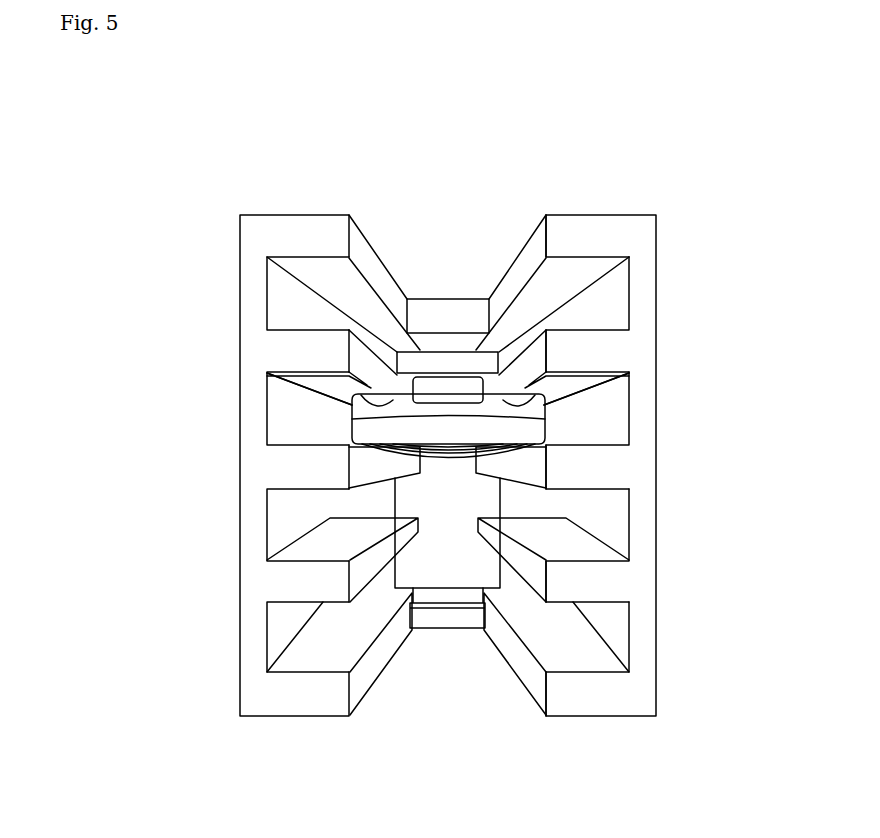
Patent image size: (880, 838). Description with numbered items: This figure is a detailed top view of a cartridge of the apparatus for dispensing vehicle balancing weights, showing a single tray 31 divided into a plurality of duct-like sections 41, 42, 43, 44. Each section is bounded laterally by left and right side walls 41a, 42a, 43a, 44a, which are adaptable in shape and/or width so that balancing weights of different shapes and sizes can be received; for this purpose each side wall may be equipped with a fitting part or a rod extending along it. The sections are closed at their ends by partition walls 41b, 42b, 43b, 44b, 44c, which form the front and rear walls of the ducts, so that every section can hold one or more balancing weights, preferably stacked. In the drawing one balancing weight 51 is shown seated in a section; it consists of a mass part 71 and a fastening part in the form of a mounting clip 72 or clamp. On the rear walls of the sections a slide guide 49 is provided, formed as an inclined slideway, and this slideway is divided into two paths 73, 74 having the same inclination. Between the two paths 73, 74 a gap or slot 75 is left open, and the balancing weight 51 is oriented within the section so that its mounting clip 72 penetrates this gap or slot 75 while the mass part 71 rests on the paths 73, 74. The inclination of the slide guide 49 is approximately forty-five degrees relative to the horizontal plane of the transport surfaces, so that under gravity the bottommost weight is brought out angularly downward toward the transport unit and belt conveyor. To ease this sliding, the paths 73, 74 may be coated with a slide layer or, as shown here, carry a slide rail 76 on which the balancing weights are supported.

The tray 31 is at (379, 124).
The section 41 is at (276, 639).
The side wall 41a is at (287, 622).
The partition wall 41b is at (598, 700).
The section 42 is at (277, 523).
The side wall 42a is at (287, 510).
The partition wall 42b is at (598, 579).
The section 43 is at (278, 425).
The side wall 43a is at (287, 418).
The partition wall 43b is at (598, 460).
The section 44 is at (280, 308).
The side wall 44a is at (289, 296).
The partition wall 44b is at (598, 352).
The partition wall 44c is at (594, 236).
The slide guide 49 is at (322, 390).
The balancing weight 51 is at (562, 418).
The mass part 71 is at (449, 428).
The mounting clip 72 is at (433, 386).
The path 73 is at (273, 378).
The path 74 is at (641, 389).
The gap or slot 75 is at (469, 345).
The slide rail 76 is at (497, 388).